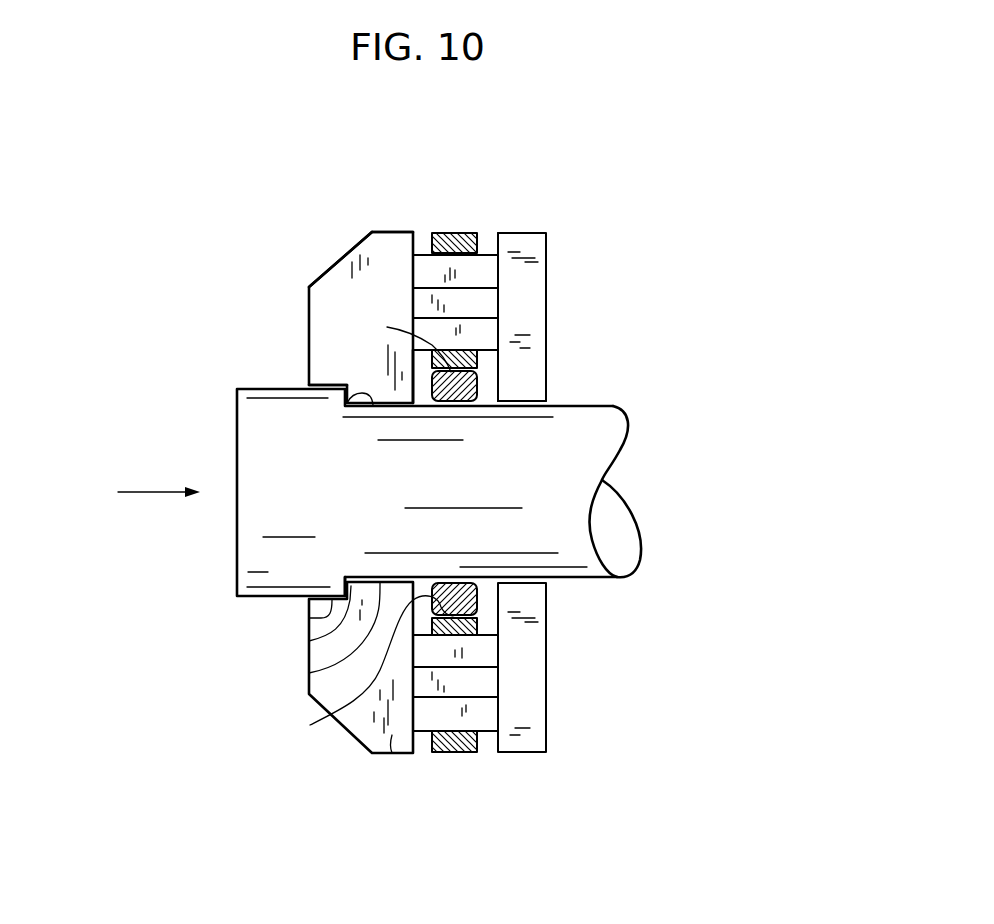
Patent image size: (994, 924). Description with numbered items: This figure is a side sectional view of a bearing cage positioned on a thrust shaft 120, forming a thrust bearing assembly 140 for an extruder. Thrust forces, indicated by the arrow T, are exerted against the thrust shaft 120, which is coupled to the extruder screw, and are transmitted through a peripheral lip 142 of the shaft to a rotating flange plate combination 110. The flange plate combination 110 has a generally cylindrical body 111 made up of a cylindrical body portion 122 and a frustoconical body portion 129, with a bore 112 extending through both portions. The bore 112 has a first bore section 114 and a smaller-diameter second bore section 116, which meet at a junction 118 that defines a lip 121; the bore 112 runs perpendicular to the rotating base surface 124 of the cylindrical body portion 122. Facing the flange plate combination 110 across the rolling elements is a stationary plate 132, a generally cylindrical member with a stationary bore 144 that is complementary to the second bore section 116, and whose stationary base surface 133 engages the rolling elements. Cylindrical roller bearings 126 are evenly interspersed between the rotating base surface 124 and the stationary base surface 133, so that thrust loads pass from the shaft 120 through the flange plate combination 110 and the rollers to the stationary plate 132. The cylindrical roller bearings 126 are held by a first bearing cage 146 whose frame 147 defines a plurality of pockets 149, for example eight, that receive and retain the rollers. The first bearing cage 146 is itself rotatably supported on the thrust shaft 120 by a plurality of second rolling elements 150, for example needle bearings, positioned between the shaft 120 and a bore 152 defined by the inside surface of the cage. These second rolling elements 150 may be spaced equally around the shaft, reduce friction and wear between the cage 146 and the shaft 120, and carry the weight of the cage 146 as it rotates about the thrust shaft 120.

The rotating flange plate combination 110 is at (330, 750).
The cylindrical body 111 is at (392, 753).
The bore 112 is at (296, 382).
The first bore section 114 is at (309, 618).
The second bore section 116 is at (309, 673).
The junction 118 is at (309, 641).
The thrust shaft 120 is at (237, 527).
The lip 121 is at (338, 580).
The cylindrical body portion 122 is at (386, 232).
The rotating base surface 124 is at (417, 358).
The cylindrical roller bearings 126 is at (483, 333).
The frustoconical body portion 129 is at (349, 260).
The stationary plate 132 is at (530, 368).
The stationary base surface 133 is at (496, 371).
The thrust bearing assembly 140 is at (450, 820).
The peripheral lip 142 is at (357, 403).
The stationary bore 144 is at (530, 401).
The first bearing cage 146 is at (463, 224).
The frame 147 is at (470, 234).
The pockets 149 is at (420, 230).
The second rolling elements 150 is at (460, 395).
The bore 152 is at (310, 725).
The thrust forces T is at (148, 490).